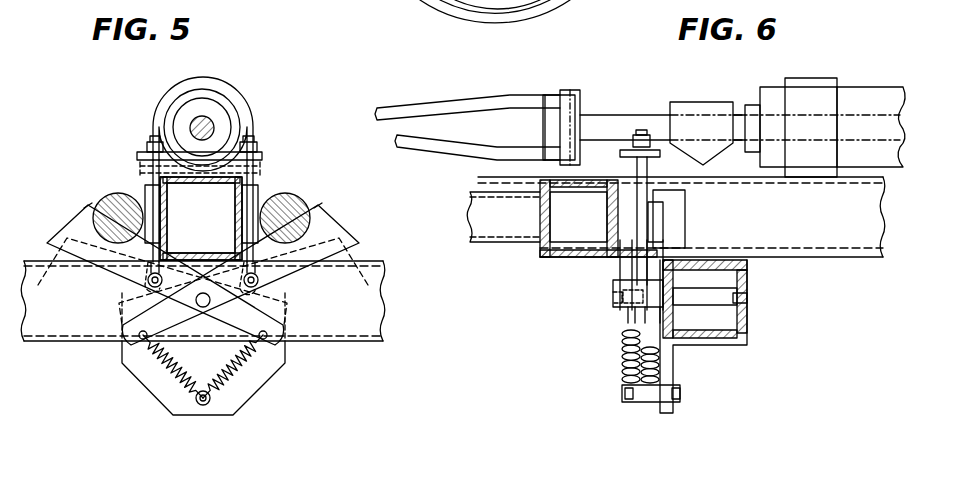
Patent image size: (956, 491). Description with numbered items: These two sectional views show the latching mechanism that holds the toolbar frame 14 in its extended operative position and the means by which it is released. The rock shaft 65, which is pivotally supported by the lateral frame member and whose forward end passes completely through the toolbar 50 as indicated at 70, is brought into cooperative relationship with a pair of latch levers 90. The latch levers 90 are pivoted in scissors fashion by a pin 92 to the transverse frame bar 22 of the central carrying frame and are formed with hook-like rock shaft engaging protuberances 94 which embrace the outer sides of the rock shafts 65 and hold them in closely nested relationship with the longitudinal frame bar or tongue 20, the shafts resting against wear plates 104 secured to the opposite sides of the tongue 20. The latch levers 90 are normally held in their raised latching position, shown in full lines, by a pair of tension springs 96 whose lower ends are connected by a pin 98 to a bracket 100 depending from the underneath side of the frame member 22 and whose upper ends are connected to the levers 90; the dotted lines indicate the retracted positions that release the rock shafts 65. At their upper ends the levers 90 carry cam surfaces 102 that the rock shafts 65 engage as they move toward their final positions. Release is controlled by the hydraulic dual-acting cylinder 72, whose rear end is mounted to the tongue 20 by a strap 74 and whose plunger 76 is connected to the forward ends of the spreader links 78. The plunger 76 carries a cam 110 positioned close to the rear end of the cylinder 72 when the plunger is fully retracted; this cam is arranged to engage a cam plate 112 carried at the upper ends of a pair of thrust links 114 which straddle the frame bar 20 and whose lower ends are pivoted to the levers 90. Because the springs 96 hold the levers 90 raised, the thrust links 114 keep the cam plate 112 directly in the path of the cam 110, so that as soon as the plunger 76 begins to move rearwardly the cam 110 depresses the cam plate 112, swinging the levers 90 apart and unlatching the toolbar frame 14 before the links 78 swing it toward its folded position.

In FIG. 5, the right toolbar frame 14 is at (268, 116).
In FIG. 5, the longitudinal frame bar or tongue 20 is at (262, 170).
In FIG. 6, the longitudinal frame bar or tongue 20 is at (527, 253).
In FIG. 5, the transverse frame bar 22 is at (334, 340).
In FIG. 6, the transverse frame bar 22 is at (748, 322).
In FIG. 6, the toolbar 50 is at (578, 255).
In FIG. 5, the pivot or rock shaft 65 is at (109, 200).
In FIG. 6, the pivot or rock shaft 65 is at (495, 232).
In FIG. 6, the rock shaft pass-through region 70 is at (667, 230).
In FIG. 5, the hydraulic dual-acting cylinder 72 is at (186, 100).
In FIG. 6, the hydraulic dual-acting cylinder 72 is at (850, 90).
In FIG. 5, the strap 74 is at (205, 82).
In FIG. 6, the strap 74 is at (798, 81).
In FIG. 5, the plunger 76 is at (212, 122).
In FIG. 6, the plunger 76 is at (630, 127).
In FIG. 6, the spreader links 78 is at (467, 103).
In FIG. 5, the latch levers 90 is at (97, 255).
In FIG. 6, the latch levers 90 is at (615, 285).
In FIG. 5, the pin 92 is at (205, 292).
In FIG. 6, the pin 92 is at (700, 305).
In FIG. 5, the rock shaft engaging protuberances 94 is at (86, 211).
In FIG. 5, the tension springs 96 is at (167, 363).
In FIG. 6, the tension springs 96 is at (622, 366).
In FIG. 5, the pin 98 is at (210, 405).
In FIG. 5, the bracket 100 is at (282, 362).
In FIG. 5, the cam surfaces 102 is at (68, 225).
In FIG. 5, the wear plates 104 is at (147, 190).
In FIG. 6, the wear plates 104 is at (680, 210).
In FIG. 5, the cam 110 is at (188, 142).
In FIG. 6, the cam 110 is at (690, 110).
In FIG. 5, the cam plate 112 is at (258, 153).
In FIG. 6, the cam plate 112 is at (627, 157).
In FIG. 5, the thrust links 114 is at (152, 180).
In FIG. 6, the thrust links 114 is at (650, 170).